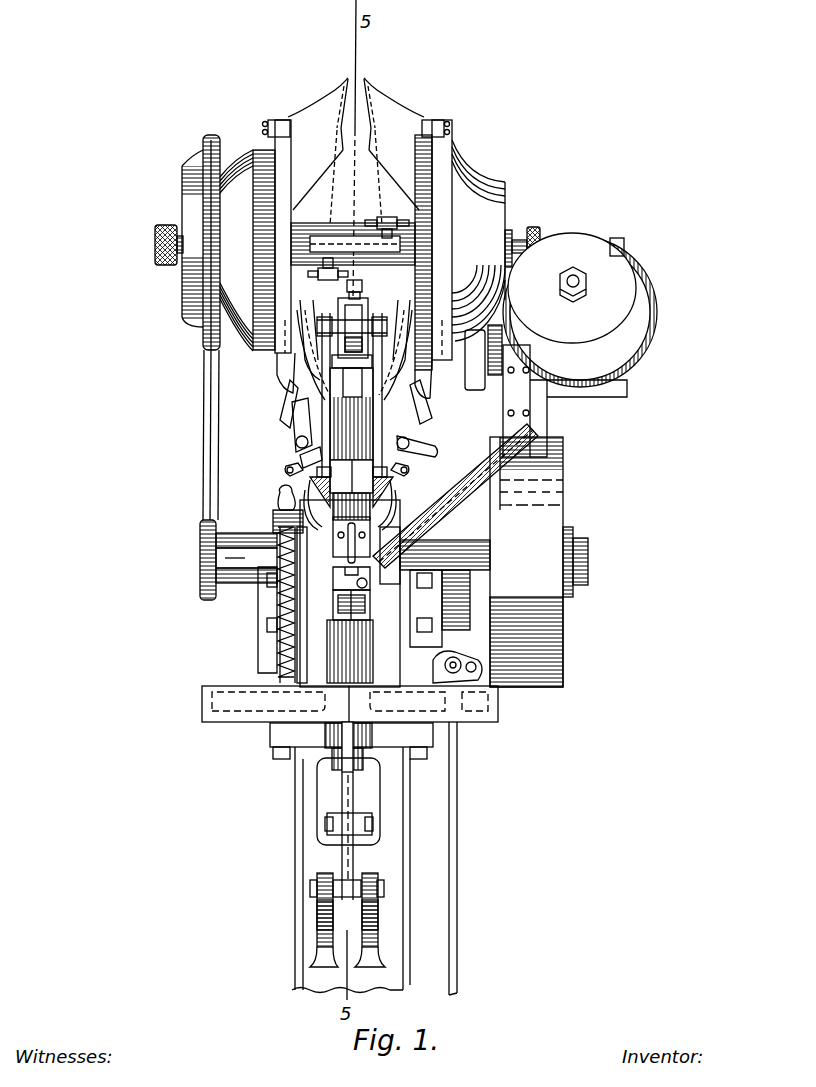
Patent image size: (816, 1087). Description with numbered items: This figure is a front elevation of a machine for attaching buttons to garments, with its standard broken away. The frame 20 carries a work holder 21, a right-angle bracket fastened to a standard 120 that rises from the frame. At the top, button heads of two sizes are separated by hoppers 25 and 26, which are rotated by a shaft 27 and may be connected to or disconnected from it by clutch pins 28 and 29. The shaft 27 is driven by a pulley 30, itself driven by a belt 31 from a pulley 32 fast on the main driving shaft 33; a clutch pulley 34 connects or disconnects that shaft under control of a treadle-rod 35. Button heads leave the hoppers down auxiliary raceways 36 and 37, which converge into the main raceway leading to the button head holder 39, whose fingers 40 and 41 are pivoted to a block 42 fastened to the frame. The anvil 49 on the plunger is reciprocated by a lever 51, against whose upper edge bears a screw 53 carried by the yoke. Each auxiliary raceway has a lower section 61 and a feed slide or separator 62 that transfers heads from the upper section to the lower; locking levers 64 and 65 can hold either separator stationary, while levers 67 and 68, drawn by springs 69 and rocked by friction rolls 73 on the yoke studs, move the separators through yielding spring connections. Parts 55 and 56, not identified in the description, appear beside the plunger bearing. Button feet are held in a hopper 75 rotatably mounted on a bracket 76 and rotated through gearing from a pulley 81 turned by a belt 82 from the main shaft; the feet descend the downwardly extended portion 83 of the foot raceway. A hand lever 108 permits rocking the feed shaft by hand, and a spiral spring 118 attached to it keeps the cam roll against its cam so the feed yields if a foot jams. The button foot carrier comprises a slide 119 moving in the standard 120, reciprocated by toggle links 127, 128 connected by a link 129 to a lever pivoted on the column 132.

The frame 20 is at (310, 598).
The holder for the work or fabric 21 is at (377, 597).
The hopper 25 is at (250, 344).
The hopper 26 is at (490, 197).
The shaft 27 is at (328, 232).
The clutch pin 28 is at (165, 262).
The clutch pin 29 is at (540, 238).
The pulley 30 is at (206, 146).
The belt 31 is at (198, 452).
The pulley 32 is at (198, 584).
The main driving shaft 33 is at (590, 562).
The clutch pulley 34 is at (547, 628).
The treadle-rod 35 is at (457, 838).
The auxiliary raceway 36 is at (286, 398).
The auxiliary raceway 37 is at (410, 410).
The button head holder 39 is at (340, 568).
The button head finger 40 is at (345, 598).
The button head finger 41 is at (367, 583).
The block 42 is at (343, 545).
The anvil 49 is at (345, 383).
The lever 51 is at (360, 297).
The screw 53 is at (360, 280).
The arm 55 is at (322, 347).
The arm 56 is at (406, 340).
The lower section 61 is at (305, 512).
The feed slide or separator 62 is at (300, 461).
The locking lever 64 is at (290, 428).
The locking lever 65 is at (432, 446).
The lever 67 is at (327, 387).
The lever 68 is at (410, 424).
The spring 69 is at (292, 441).
The friction roll 73 is at (355, 322).
The hopper 75 is at (608, 270).
The bracket 76 is at (540, 412).
The pulley 81 is at (465, 378).
The belt 82 is at (468, 504).
The downwardly extended portion of the raceway 83 is at (500, 480).
The hand lever 108 is at (280, 498).
The spiral spring 118 is at (277, 652).
The slide 119 is at (358, 765).
The standard 120 is at (360, 667).
The toggle link 127 is at (343, 792).
The toggle link 128 is at (337, 857).
The link 129 is at (328, 817).
The column 132 is at (305, 927).